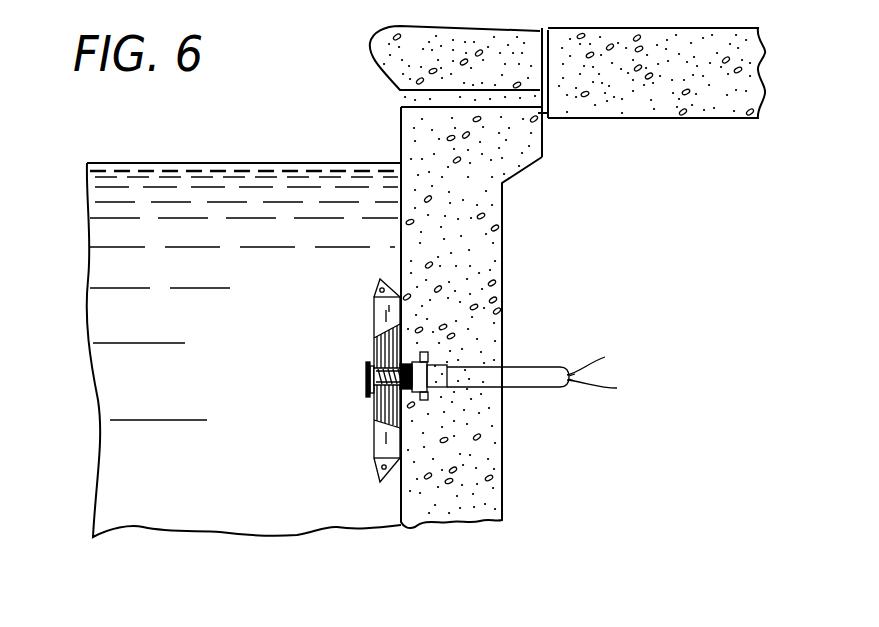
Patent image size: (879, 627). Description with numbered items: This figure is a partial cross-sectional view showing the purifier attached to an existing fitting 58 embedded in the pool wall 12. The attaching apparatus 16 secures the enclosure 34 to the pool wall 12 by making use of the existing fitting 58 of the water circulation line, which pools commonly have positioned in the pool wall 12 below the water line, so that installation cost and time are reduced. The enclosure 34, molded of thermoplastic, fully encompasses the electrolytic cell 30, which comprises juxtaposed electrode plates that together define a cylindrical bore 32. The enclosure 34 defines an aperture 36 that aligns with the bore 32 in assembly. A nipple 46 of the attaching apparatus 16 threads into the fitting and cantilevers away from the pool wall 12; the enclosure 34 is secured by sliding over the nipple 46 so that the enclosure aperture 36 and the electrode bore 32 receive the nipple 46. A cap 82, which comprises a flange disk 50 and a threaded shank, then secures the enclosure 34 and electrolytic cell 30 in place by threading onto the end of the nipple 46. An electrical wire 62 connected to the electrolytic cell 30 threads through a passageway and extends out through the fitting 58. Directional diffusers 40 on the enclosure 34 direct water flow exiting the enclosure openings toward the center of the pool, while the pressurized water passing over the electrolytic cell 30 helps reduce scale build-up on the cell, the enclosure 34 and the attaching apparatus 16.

The pool wall 12 is at (452, 503).
The attaching apparatus 16 is at (408, 398).
The electrolytic cell 30 is at (447, 382).
The cylindrical bore 32 is at (372, 347).
The enclosure 34 is at (372, 307).
The aperture 36 is at (375, 413).
The directional diffuser 40 is at (378, 277).
The nipple 46 is at (418, 343).
The flange disk 50 is at (360, 388).
The existing fitting 58 is at (428, 353).
The electrical wire 62 is at (603, 355).
The cap 82 is at (355, 369).